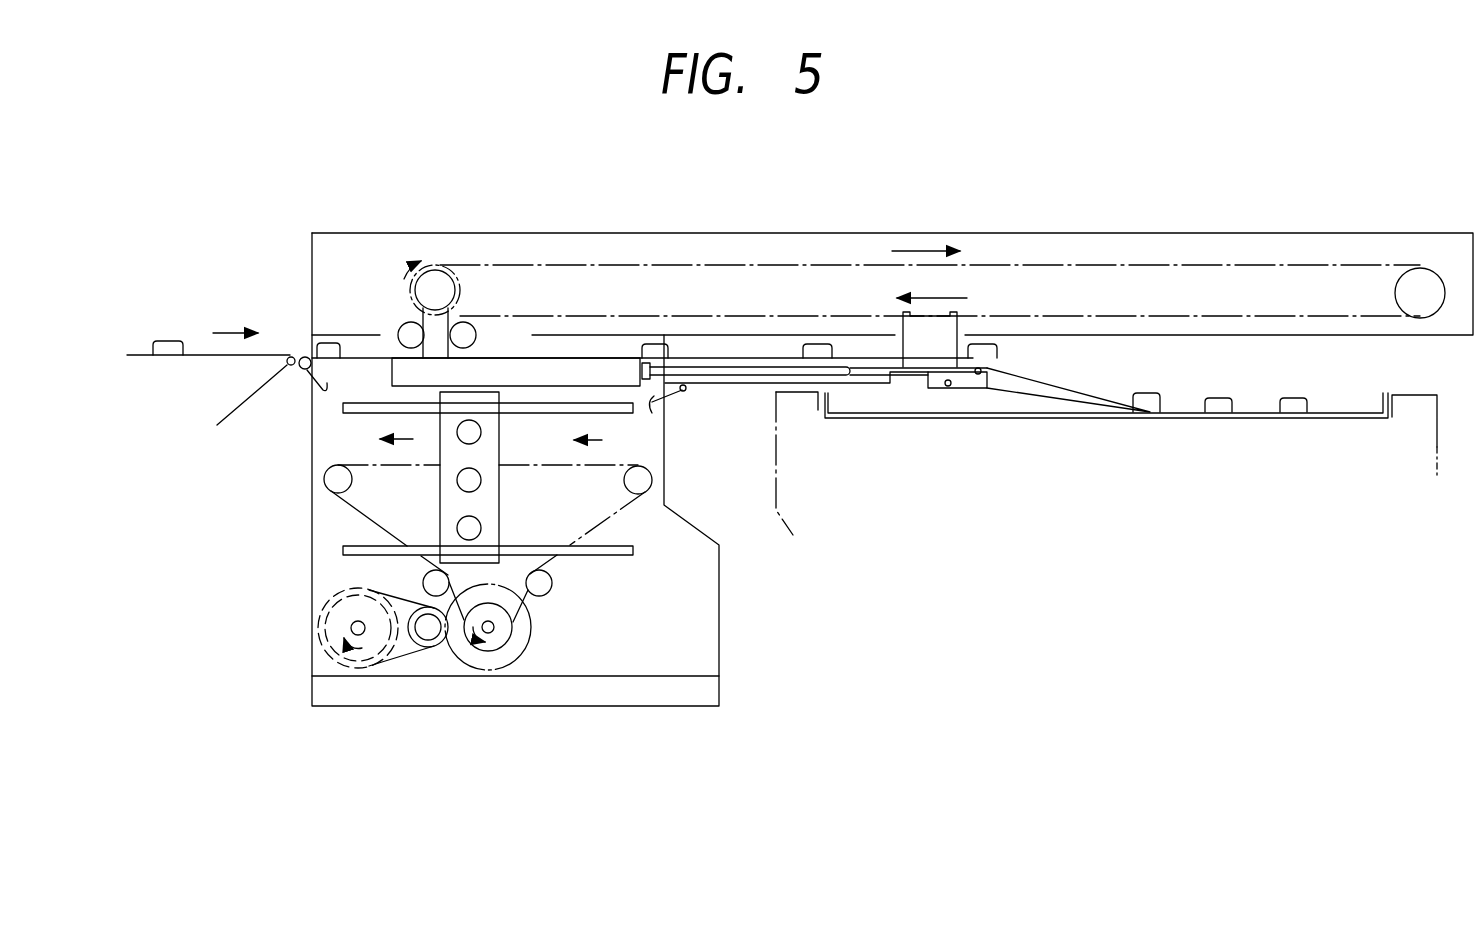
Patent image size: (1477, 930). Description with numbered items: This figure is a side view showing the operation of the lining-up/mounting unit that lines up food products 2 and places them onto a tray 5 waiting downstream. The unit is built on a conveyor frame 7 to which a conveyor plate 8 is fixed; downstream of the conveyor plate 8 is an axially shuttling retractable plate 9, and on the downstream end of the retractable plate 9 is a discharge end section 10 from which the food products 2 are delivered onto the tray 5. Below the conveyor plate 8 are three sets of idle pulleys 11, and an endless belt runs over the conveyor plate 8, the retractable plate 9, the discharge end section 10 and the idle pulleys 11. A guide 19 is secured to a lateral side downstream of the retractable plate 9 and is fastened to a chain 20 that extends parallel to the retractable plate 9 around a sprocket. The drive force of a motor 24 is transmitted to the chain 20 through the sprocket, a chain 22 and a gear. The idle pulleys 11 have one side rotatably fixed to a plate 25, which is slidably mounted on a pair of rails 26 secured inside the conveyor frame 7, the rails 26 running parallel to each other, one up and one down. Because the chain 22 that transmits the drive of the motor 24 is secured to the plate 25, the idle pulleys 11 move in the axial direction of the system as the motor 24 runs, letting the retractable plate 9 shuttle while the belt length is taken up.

The food product 2 is at (1227, 398).
The tray 5 is at (1343, 410).
The conveyor frame 7 is at (312, 580).
The conveyor plate 8 is at (598, 366).
The retractable plate 9 is at (790, 376).
The discharge end section 10 is at (1132, 414).
The idle pulleys 11 is at (481, 528).
The guide 19 is at (953, 332).
The chain 20 is at (1238, 265).
The chain 22 is at (358, 515).
The motor 24 is at (320, 628).
The plate 25 is at (450, 458).
The rails 26 is at (613, 413).